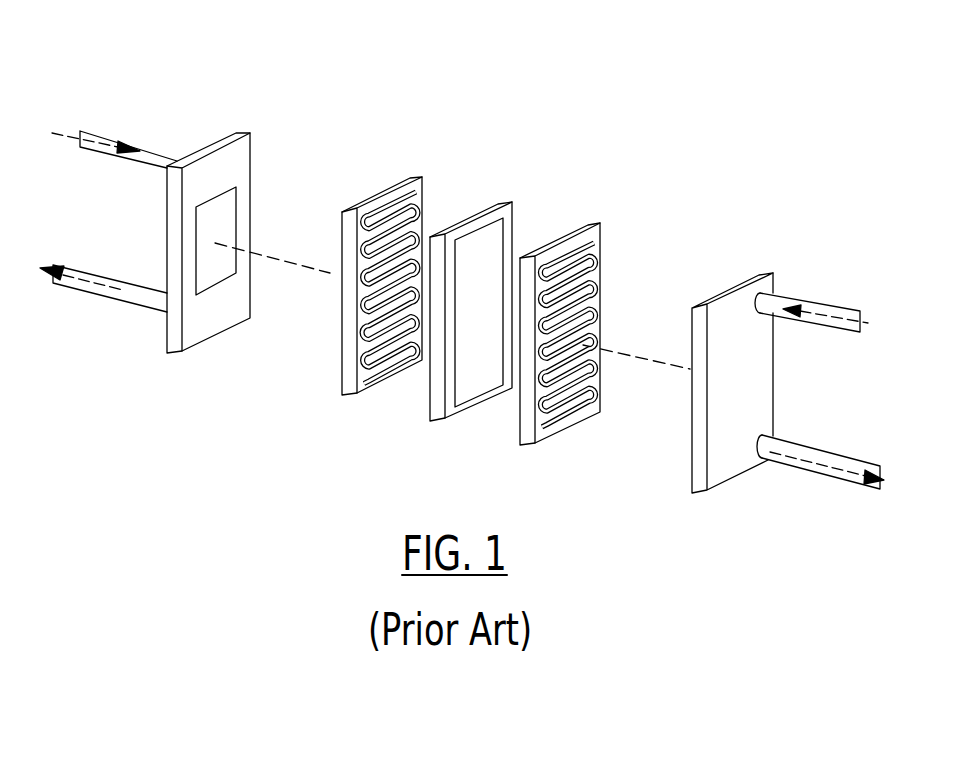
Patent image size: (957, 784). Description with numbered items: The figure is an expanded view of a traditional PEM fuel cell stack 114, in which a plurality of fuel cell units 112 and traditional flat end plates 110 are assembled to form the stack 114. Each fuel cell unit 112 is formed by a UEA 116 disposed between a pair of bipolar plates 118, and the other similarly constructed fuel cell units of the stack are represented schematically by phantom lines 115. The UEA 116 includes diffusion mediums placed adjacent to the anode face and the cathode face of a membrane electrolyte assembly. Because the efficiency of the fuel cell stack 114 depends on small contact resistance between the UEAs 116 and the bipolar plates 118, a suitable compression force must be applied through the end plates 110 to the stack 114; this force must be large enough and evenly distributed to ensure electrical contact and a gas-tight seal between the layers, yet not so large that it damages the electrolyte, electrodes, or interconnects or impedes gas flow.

The flat end plate 110 is at (222, 133).
The fuel cell unit 112 is at (703, 237).
The fuel cell stack 114 is at (687, 80).
The phantom lines 115 is at (293, 263).
The UEA 116 is at (455, 420).
The bipolar plate 118 is at (365, 393).